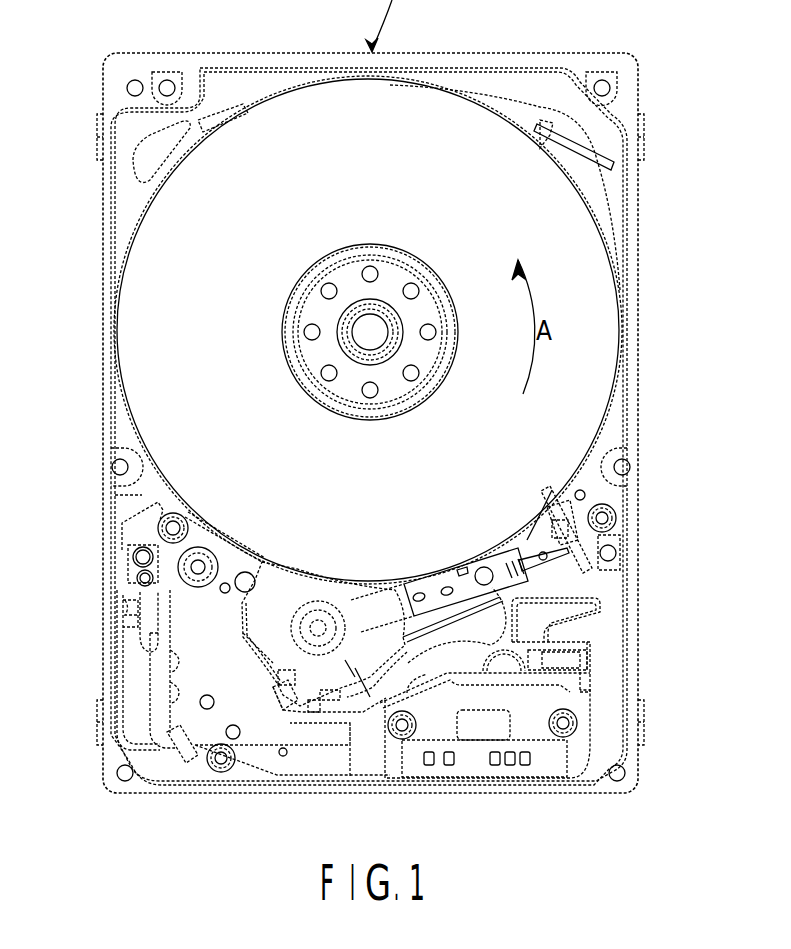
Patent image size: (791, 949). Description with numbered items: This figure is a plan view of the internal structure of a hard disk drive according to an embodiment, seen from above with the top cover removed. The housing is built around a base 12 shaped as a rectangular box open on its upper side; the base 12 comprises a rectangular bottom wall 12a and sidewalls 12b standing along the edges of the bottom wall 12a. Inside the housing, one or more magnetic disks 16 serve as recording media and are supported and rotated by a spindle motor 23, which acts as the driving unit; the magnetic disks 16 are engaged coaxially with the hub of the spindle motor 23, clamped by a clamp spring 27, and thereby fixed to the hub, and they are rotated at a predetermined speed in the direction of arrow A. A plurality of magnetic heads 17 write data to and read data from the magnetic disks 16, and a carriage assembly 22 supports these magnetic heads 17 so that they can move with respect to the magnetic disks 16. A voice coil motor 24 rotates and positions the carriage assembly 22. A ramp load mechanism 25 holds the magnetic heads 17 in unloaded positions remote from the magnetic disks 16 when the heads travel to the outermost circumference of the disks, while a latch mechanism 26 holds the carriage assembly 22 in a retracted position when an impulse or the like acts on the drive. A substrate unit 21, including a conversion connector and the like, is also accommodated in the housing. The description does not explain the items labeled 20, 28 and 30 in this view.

The base 12 is at (640, 255).
The bottom wall 12a is at (612, 652).
The sidewalls 12b is at (263, 53).
The magnetic disk 16 is at (160, 258).
The magnetic head 17 is at (532, 552).
The top cover 20 is at (497, 70).
The substrate unit 21 is at (535, 730).
The carriage assembly 22 is at (402, 586).
The spindle motor 23 is at (378, 325).
The voice coil motor 24 is at (300, 730).
The ramp load mechanism 25 is at (612, 532).
The latch mechanism 26 is at (150, 597).
The clamp spring 27 is at (295, 342).
The arm 28 is at (442, 585).
The head suspension 30 is at (522, 546).